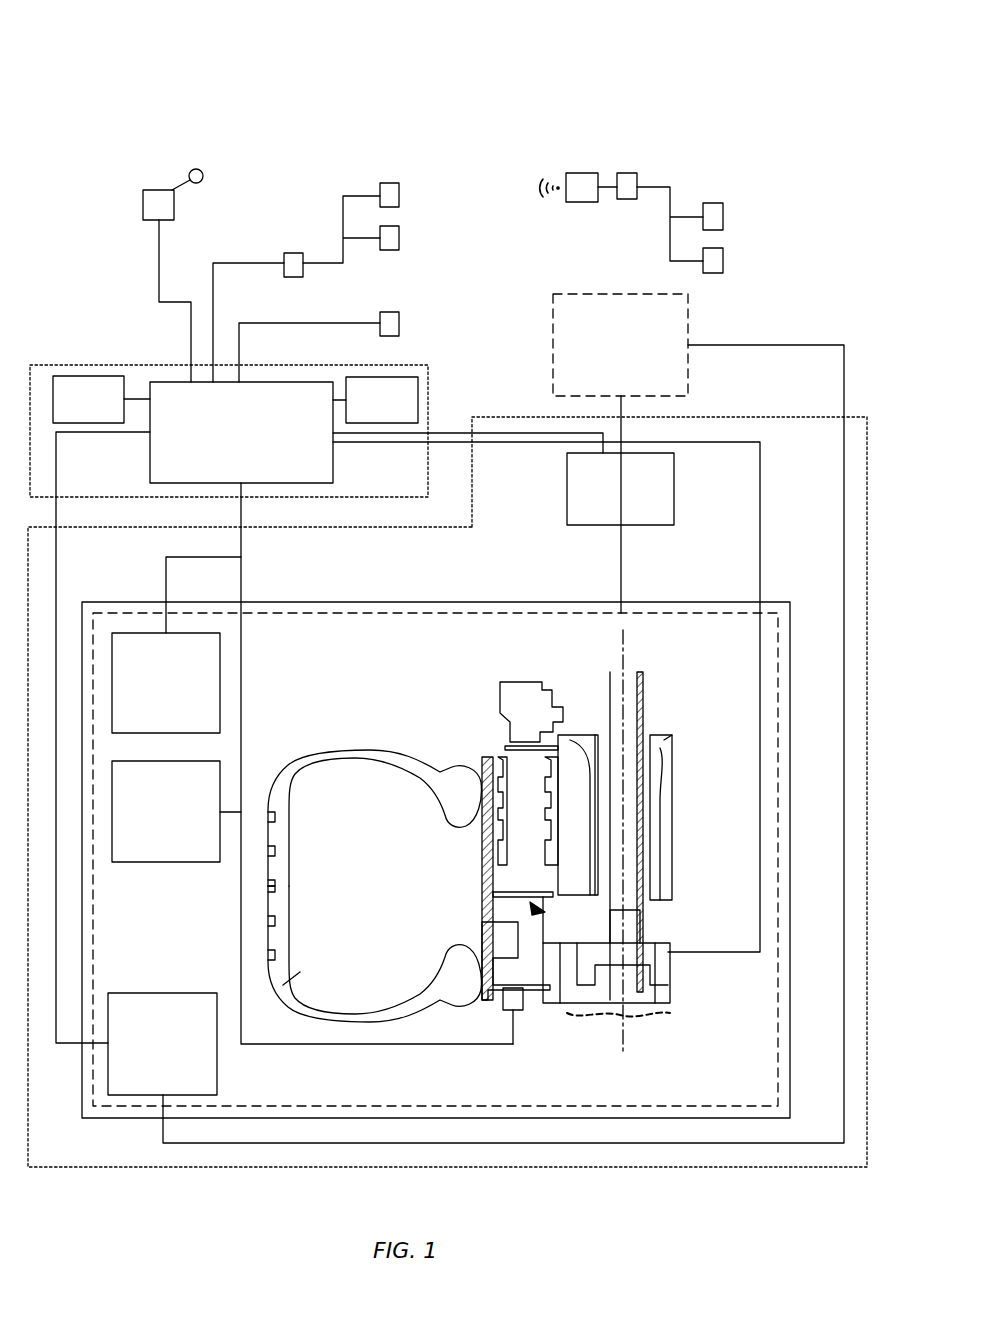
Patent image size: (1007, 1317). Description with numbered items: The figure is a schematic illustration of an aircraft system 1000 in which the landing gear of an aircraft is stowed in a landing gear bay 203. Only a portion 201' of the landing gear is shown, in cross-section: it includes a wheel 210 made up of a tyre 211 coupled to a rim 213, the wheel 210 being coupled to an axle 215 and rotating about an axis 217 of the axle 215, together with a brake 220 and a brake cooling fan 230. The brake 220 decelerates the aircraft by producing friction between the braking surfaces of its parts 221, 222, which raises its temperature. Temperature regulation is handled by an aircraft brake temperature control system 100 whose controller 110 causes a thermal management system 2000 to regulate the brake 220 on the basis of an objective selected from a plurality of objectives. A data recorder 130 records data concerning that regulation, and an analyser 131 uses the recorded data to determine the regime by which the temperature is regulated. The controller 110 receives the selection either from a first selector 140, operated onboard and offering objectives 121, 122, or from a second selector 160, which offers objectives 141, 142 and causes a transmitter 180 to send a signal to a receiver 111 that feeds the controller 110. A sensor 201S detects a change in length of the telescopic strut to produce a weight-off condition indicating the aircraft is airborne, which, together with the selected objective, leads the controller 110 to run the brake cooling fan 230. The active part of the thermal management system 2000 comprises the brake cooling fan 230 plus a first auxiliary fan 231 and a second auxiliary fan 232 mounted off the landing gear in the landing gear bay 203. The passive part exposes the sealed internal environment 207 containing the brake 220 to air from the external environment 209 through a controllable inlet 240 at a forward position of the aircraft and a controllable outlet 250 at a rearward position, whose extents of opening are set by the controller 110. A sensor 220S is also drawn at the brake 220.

The aircraft system 1000 is at (563, 72).
The aircraft brake temperature control system 100 is at (118, 365).
The receiver 111 is at (186, 180).
The first selector 140 is at (286, 253).
The objective 121 is at (399, 190).
The objective 122 is at (399, 236).
The sensor 201S is at (399, 323).
The transmitter 180 is at (598, 173).
The second selector 160 is at (637, 176).
The objective 141 is at (723, 213).
The objective 142 is at (723, 258).
The analyser 131 is at (101, 399).
The controller 110 is at (408, 713).
The data recorder 130 is at (375, 400).
The external environment 209 is at (503, 718).
The thermal management system 2000 is at (712, 415).
The inlet 240 is at (620, 489).
The internal environment 207 is at (497, 613).
The landing gear bay 203 is at (670, 602).
The first auxiliary fan 231 is at (176, 645).
The second auxiliary fan 232 is at (176, 811).
The outlet 250 is at (162, 1044).
The portion of the landing gear 201' is at (455, 852).
The brake 220 is at (430, 702).
The part of the brake 221 is at (500, 698).
The part of the brake 222 is at (507, 757).
The axle 215 is at (632, 695).
The wheel 210 is at (258, 917).
The tyre 211 is at (293, 993).
The rim 213 is at (480, 945).
The brake cooling fan 230 is at (682, 958).
The rim sensor 220S is at (515, 1012).
The axis 217 is at (625, 1050).